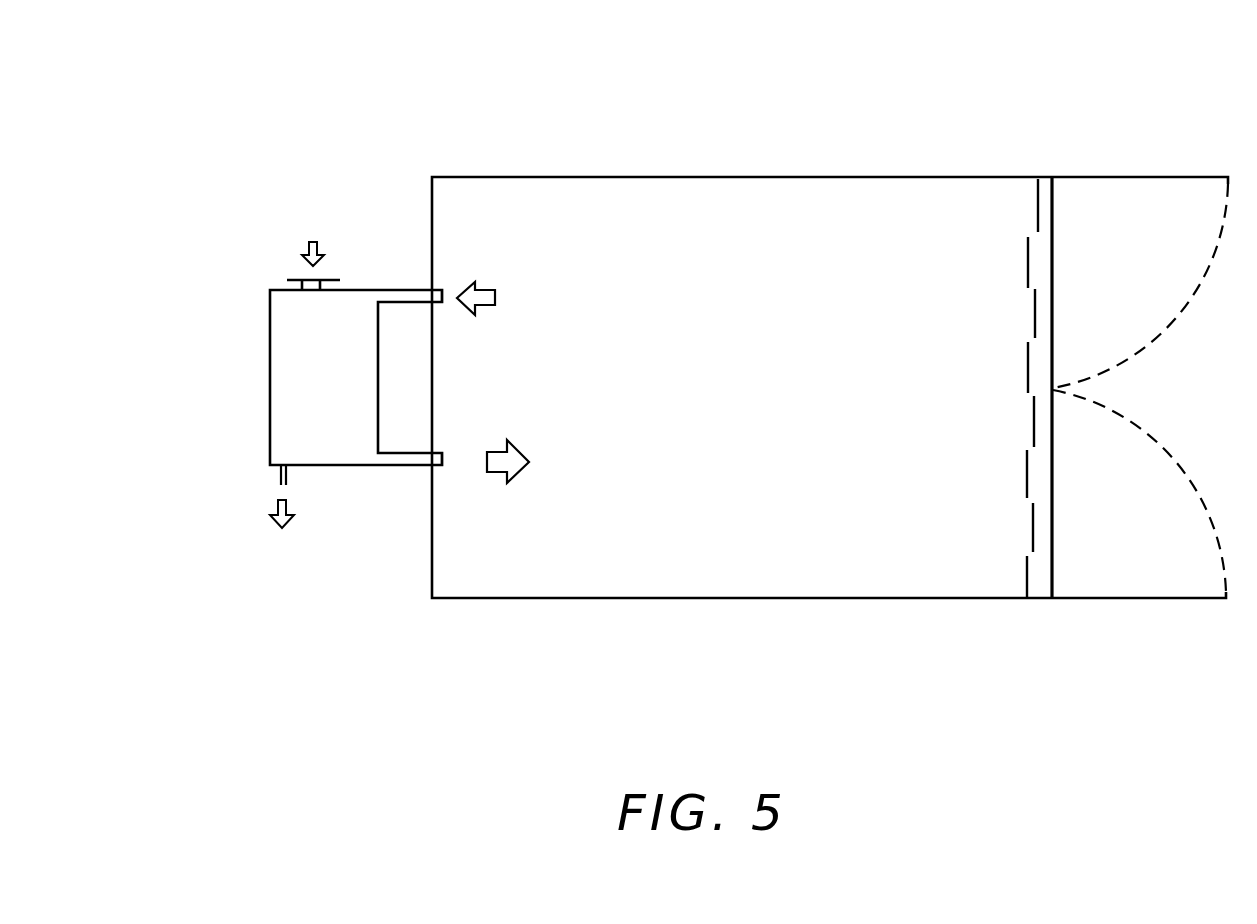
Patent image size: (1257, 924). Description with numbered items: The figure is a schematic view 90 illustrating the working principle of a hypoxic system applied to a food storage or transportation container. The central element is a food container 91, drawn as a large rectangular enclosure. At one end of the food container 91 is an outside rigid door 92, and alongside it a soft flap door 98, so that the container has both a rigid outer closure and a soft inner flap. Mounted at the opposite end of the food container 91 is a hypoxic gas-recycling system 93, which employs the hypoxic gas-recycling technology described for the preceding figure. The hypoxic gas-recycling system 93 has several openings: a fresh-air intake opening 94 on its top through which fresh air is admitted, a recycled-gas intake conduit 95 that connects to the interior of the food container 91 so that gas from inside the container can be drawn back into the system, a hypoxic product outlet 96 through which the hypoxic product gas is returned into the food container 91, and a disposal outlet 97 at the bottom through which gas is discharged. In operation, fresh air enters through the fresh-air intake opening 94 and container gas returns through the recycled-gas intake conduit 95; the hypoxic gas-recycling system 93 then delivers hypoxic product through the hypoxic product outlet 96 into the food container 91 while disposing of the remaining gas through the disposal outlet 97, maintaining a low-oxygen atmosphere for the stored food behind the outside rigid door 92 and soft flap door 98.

The schematic view 90 is at (311, 118).
The food container 91 is at (750, 193).
The outside rigid door 92 is at (1053, 291).
The hypoxic gas-recycling system 93 is at (285, 354).
The fresh-air intake opening 94 is at (298, 282).
The recycled-gas intake conduit 95 is at (443, 290).
The hypoxic product outlet 96 is at (442, 467).
The disposal outlet 97 is at (282, 486).
The soft flap door 98 is at (1027, 369).